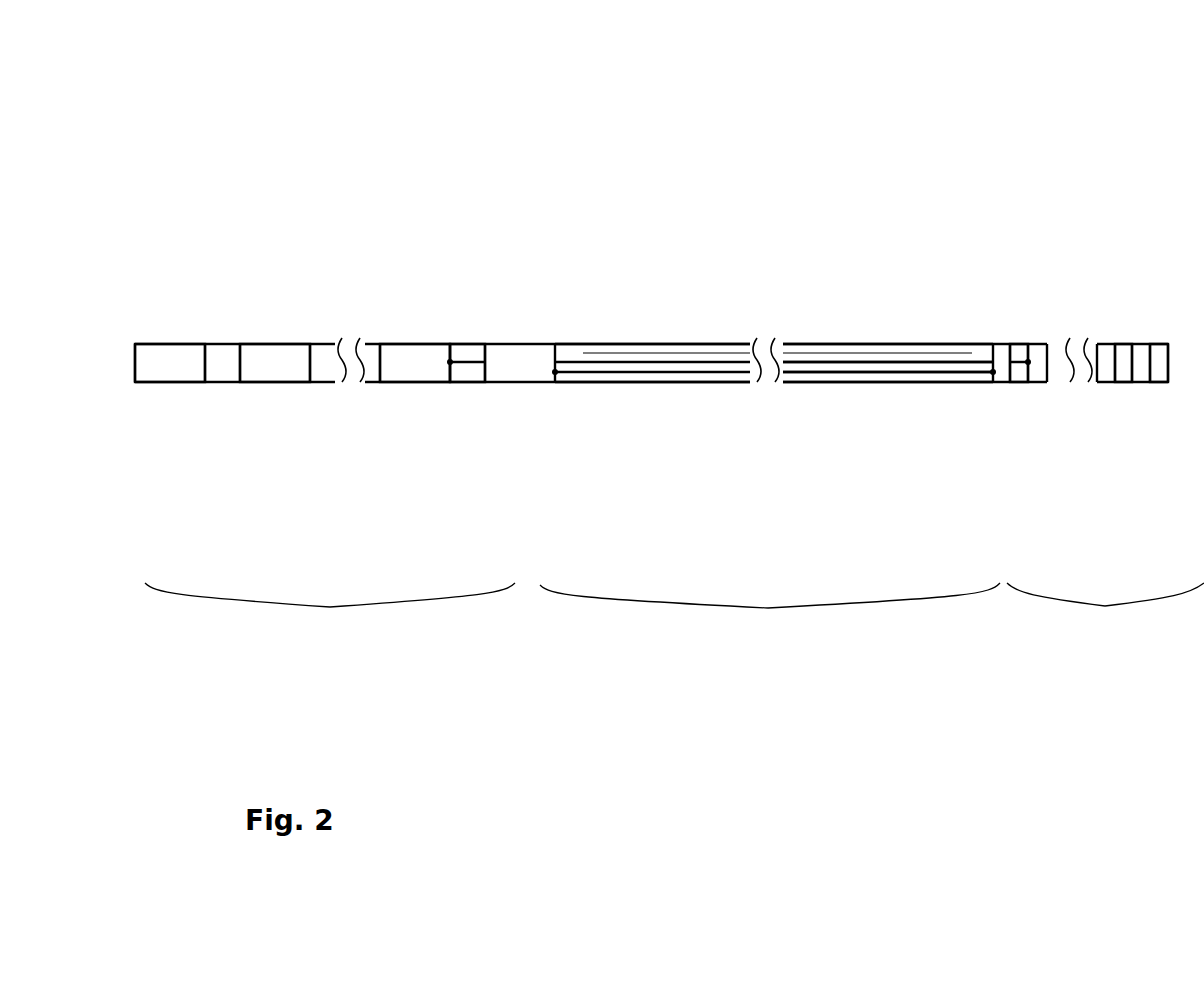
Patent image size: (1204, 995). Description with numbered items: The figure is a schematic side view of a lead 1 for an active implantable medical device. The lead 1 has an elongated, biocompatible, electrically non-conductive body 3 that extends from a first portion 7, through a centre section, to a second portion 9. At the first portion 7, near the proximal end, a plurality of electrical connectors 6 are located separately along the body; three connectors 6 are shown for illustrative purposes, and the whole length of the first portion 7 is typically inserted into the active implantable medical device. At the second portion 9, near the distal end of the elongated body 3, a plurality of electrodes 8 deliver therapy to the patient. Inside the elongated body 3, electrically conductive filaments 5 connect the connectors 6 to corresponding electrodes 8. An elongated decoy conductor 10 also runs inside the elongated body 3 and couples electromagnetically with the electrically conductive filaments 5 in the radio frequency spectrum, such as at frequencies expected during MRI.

The lead 1 is at (590, 222).
The elongated body 3 is at (870, 382).
The electrically conductive filaments 5 is at (476, 355).
The electrical connectors 6 is at (1122, 352).
The first portion 7 is at (1108, 617).
The electrodes 8 is at (183, 355).
The second portion 9 is at (332, 611).
The decoy conductor 10 is at (880, 352).